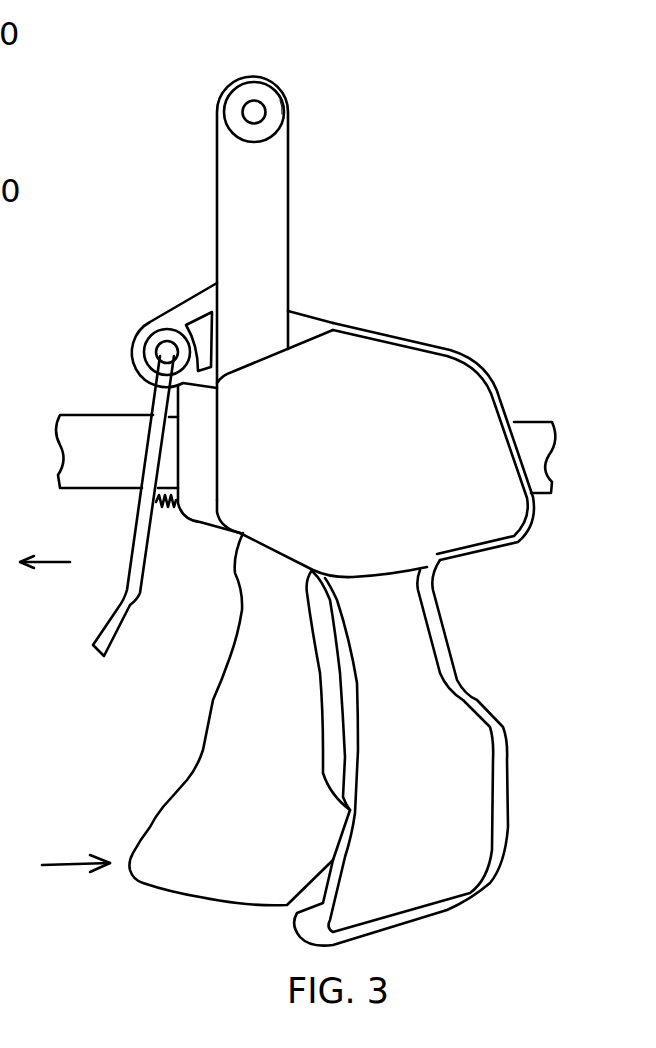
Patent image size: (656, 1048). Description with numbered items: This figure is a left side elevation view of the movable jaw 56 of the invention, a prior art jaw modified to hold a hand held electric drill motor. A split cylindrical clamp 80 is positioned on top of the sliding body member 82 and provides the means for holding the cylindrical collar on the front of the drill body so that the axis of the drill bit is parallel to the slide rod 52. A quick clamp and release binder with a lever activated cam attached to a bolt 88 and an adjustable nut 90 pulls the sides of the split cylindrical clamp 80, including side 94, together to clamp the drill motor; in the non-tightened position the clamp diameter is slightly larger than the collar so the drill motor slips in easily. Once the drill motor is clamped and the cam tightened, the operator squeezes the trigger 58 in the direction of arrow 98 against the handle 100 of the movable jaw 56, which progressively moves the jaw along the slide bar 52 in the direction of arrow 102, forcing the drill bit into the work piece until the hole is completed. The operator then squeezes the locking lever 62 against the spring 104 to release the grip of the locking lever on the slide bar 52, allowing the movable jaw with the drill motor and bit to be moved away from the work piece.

The slide rod 52 is at (107, 414).
The movable jaw 56 is at (415, 340).
The trigger 58 is at (153, 830).
The locking lever 62 is at (125, 625).
The split cylindrical clamp 80 is at (279, 193).
The sliding body member 82 is at (333, 323).
The bolt 88 is at (255, 100).
The adjustable nut 90 is at (278, 107).
The side of the split cylindrical clamp 94 is at (280, 160).
The arrow 98 is at (77, 865).
The handle 100 is at (497, 715).
The arrow 102 is at (73, 522).
The spring 104 is at (167, 513).